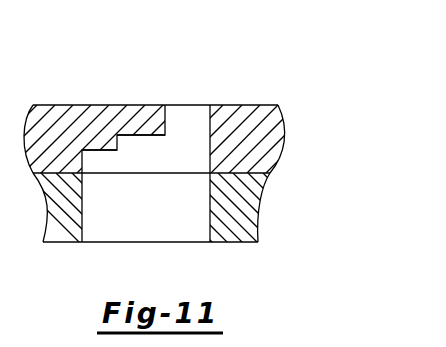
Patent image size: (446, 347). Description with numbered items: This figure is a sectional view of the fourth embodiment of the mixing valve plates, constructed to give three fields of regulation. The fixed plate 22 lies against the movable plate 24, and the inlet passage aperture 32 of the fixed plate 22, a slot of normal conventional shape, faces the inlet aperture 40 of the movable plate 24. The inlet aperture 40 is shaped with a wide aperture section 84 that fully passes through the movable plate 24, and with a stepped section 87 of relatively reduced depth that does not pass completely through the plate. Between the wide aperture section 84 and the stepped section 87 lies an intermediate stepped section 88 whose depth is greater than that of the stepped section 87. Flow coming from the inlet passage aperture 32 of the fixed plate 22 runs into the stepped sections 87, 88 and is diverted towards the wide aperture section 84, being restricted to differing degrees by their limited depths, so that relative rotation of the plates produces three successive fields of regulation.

The fixed valve plate 22 is at (248, 200).
The movable plate 24 is at (277, 110).
The inlet passage aperture 32 is at (168, 237).
The inlet aperture 40 is at (190, 118).
The wide aperture section 84 is at (177, 108).
The stepped section 87 is at (92, 151).
The intermediate stepped section 88 is at (140, 137).